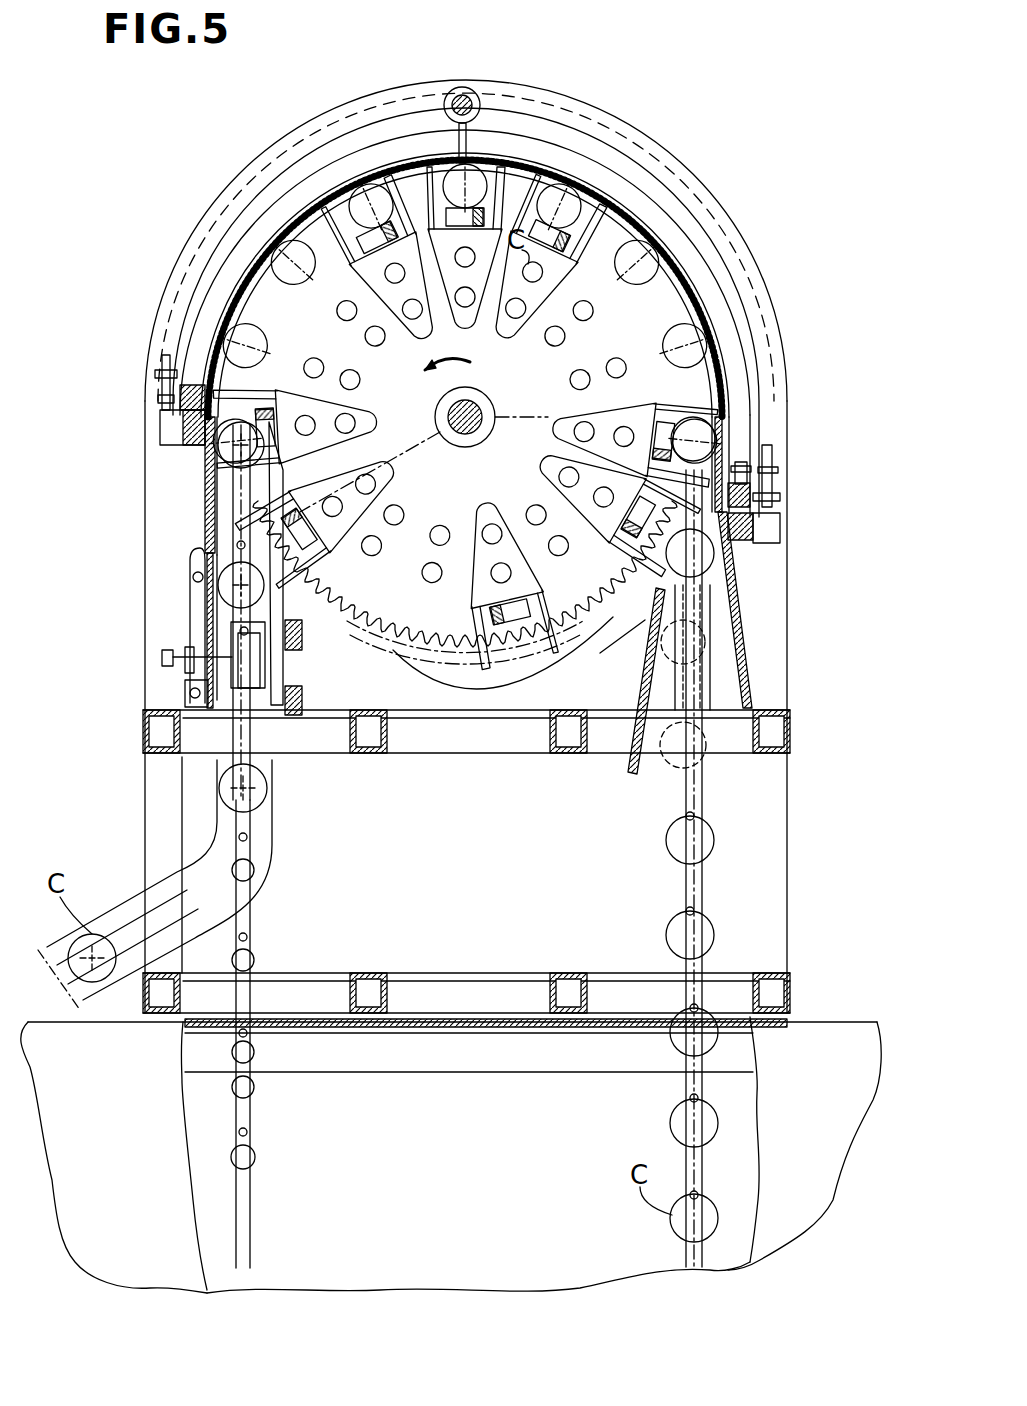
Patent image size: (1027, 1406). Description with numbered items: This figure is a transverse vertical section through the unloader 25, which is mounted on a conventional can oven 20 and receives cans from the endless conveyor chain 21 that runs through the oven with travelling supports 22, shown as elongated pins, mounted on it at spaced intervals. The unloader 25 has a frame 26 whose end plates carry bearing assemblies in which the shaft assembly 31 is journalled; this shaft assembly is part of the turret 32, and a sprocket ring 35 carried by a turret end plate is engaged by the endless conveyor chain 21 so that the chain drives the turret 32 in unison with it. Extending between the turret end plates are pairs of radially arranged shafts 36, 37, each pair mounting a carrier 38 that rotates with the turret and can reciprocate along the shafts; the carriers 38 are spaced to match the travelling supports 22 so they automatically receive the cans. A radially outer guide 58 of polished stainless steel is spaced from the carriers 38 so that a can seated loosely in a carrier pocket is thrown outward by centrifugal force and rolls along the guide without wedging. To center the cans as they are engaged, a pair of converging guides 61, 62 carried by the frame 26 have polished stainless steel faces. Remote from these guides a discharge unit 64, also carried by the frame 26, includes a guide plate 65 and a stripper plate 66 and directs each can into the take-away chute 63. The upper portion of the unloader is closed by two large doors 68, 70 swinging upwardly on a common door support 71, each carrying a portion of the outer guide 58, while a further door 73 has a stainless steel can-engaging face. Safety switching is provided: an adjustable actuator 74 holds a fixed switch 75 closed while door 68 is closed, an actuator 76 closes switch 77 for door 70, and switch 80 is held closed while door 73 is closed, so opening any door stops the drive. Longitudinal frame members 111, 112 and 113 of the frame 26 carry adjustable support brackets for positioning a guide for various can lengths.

The oven 20 is at (875, 1016).
The endless conveyor chain 21 is at (250, 1203).
The travelling supports 22 is at (250, 1135).
The unloader 25 is at (767, 290).
The frame 26 is at (799, 828).
The shaft assembly 31 is at (478, 410).
The turret 32 is at (400, 652).
The sprocket ring 35 is at (593, 633).
The shaft 36 is at (530, 267).
The shaft 37 is at (472, 349).
The carrier 38 is at (485, 510).
The radially outer guide 58 is at (418, 160).
The converging guide 61 is at (634, 776).
The converging guide 62 is at (735, 612).
The take-away chute 63 is at (282, 850).
The discharge unit 64 is at (186, 517).
The guide plate 65 is at (212, 480).
The stripper plate 66 is at (303, 568).
The door 68 is at (687, 213).
The door 70 is at (288, 168).
The door support 71 is at (462, 88).
The door 73 is at (188, 605).
The actuator 74 is at (780, 480).
The switch 75 is at (782, 525).
The actuator 76 is at (160, 400).
The switch 77 is at (160, 440).
The switch 80 is at (265, 672).
The longitudinal frame member 111 is at (305, 640).
The longitudinal frame member 112 is at (305, 712).
The longitudinal frame member 113 is at (182, 712).